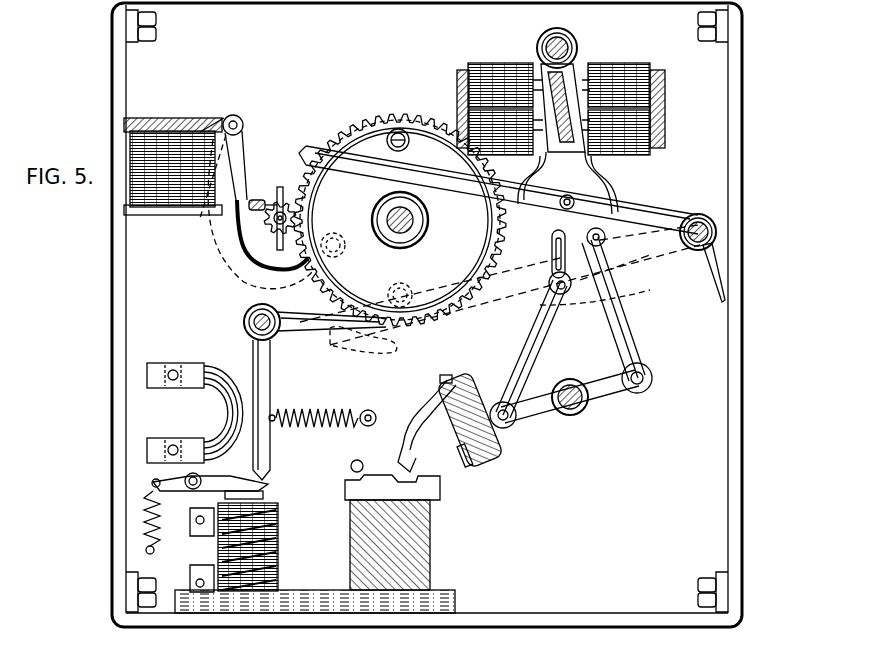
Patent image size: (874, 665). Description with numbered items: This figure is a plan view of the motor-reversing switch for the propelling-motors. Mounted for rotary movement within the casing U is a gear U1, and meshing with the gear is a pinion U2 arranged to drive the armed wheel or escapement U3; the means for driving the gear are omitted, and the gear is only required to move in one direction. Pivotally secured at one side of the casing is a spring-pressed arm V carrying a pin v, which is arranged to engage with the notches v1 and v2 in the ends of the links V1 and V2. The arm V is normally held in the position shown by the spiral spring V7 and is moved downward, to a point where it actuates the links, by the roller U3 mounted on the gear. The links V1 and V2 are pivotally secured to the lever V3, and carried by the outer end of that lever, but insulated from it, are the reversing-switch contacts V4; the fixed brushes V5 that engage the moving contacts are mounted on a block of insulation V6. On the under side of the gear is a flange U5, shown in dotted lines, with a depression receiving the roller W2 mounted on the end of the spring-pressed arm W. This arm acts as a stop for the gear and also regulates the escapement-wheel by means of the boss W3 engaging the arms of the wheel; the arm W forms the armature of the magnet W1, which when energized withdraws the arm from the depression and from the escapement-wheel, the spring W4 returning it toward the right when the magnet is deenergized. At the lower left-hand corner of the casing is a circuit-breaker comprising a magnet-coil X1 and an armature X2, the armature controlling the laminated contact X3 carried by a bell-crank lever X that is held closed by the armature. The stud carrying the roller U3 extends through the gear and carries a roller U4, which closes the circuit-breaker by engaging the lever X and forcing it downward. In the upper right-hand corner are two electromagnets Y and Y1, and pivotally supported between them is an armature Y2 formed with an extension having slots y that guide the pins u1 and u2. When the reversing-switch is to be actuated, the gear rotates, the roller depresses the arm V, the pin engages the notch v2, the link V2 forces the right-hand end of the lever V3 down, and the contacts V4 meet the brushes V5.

The casing U is at (742, 122).
The gear U1 is at (354, 120).
The pinion U2 is at (288, 196).
The roller U3 is at (398, 126).
The roller U4 is at (410, 290).
The flange U5 is at (330, 302).
The spring-pressed arm V is at (620, 218).
The pin v is at (568, 206).
The link V1 is at (522, 356).
The link V2 is at (628, 320).
The lever V3 is at (606, 402).
The reversing-switch contacts V4 is at (454, 378).
The fixed brushes V5 is at (422, 404).
The block of insulation V6 is at (430, 559).
The spiral spring V7 is at (726, 258).
The spring-pressed arm W is at (248, 272).
The magnet W1 is at (174, 122).
The roller W2 is at (332, 229).
The boss W3 is at (256, 198).
The spring W4 is at (233, 115).
The bell-crank lever X is at (272, 370).
The magnet-coil X1 is at (278, 542).
The armature X2 is at (262, 491).
The laminated contact X3 is at (212, 402).
The electromagnet Y is at (490, 65).
The electromagnet Y1 is at (622, 64).
The armature Y2 is at (536, 150).
The slots y is at (551, 238).
The pin u1 is at (552, 285).
The pin u2 is at (585, 232).
The notch v1 is at (548, 270).
The notch v2 is at (622, 240).